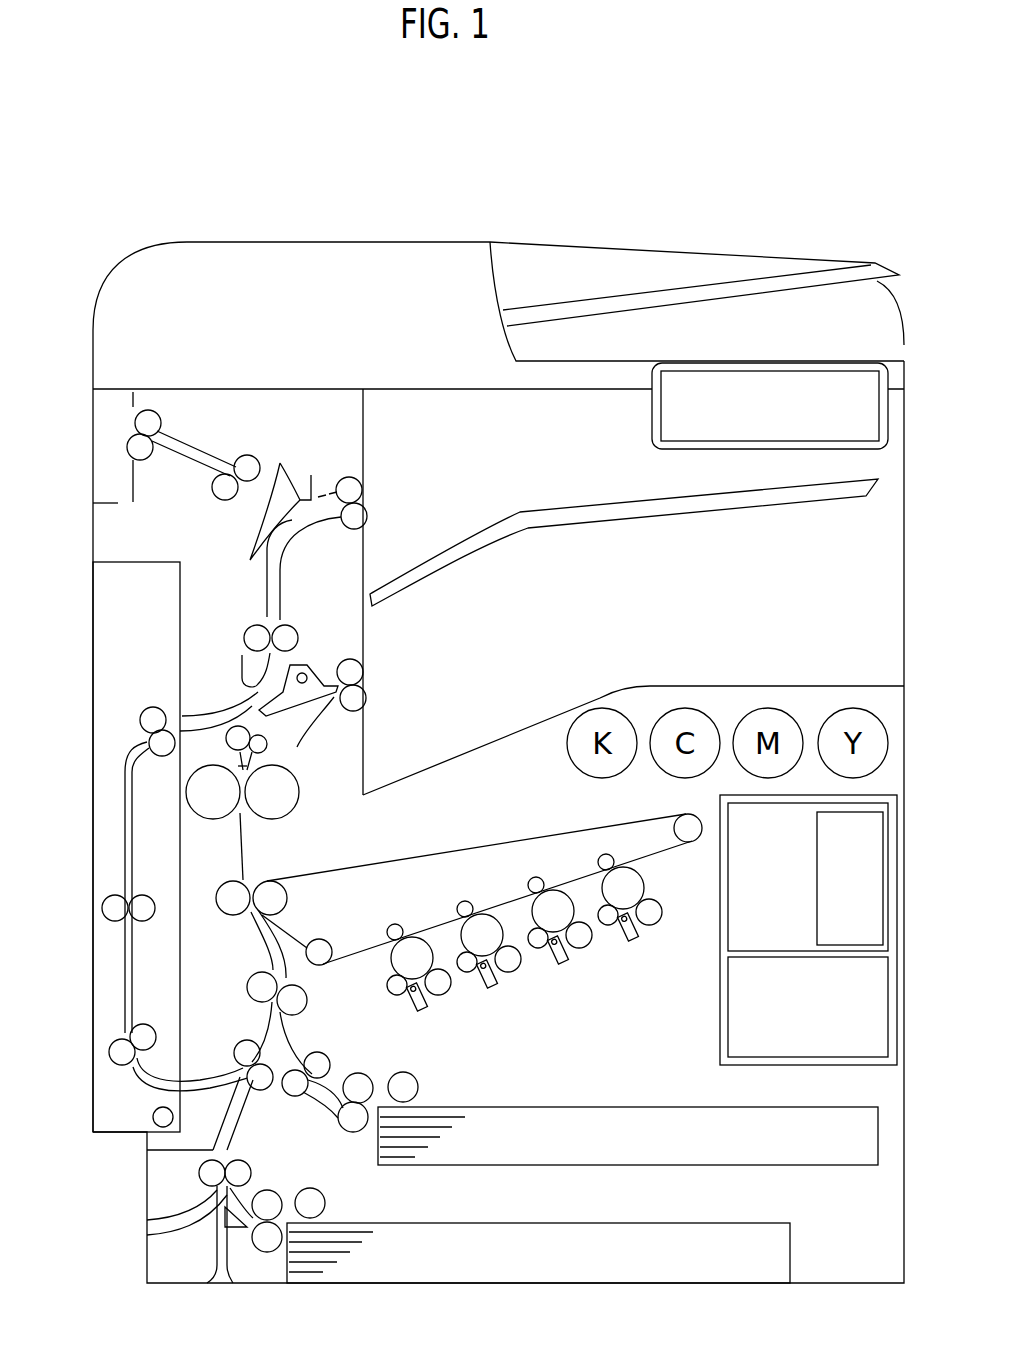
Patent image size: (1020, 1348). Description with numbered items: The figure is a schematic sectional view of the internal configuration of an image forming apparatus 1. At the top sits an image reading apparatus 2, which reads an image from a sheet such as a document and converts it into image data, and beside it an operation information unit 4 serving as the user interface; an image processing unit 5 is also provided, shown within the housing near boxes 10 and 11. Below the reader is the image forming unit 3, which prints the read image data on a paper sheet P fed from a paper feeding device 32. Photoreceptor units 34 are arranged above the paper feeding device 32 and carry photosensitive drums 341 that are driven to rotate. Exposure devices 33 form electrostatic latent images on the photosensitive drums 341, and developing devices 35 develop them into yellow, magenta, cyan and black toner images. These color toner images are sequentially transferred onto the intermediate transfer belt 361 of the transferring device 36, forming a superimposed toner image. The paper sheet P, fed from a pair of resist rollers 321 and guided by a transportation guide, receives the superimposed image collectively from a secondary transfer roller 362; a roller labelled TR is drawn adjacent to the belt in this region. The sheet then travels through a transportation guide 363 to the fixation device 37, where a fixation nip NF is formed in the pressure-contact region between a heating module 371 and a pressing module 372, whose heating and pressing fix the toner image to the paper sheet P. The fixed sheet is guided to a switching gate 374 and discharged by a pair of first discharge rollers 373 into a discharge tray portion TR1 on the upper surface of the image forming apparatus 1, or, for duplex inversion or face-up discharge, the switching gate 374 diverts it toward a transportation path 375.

The image forming apparatus 1 is at (108, 240).
The image reading apparatus 2 is at (320, 338).
The image forming unit 3 is at (456, 942).
The operation information unit 4 is at (777, 422).
The image processing unit 5 is at (818, 1023).
The controller 10 is at (774, 845).
The memory 11 is at (865, 893).
The paper feeding device 32 is at (424, 1068).
The pair of resist rollers 321 is at (292, 1000).
The exposure device 33 is at (632, 937).
The photoreceptor unit 34 is at (590, 891).
The photosensitive drum 341 is at (621, 888).
The developing device 35 is at (658, 926).
The transferring device 36 is at (448, 881).
The intermediate transfer belt 361 is at (458, 851).
The secondary transfer roller 362 is at (245, 909).
The transportation guide 363 is at (245, 845).
The fixation device 37 is at (328, 741).
The heating module 371 is at (277, 820).
The pressing module 372 is at (215, 819).
The pair of first discharge rollers 373 is at (370, 692).
The switching gate 374 is at (307, 672).
The transportation path 375 is at (255, 597).
The fixation nip NF is at (245, 777).
The transfer roller TR is at (273, 938).
The discharge tray portion TR1 is at (553, 705).
The paper sheet P is at (582, 1195).